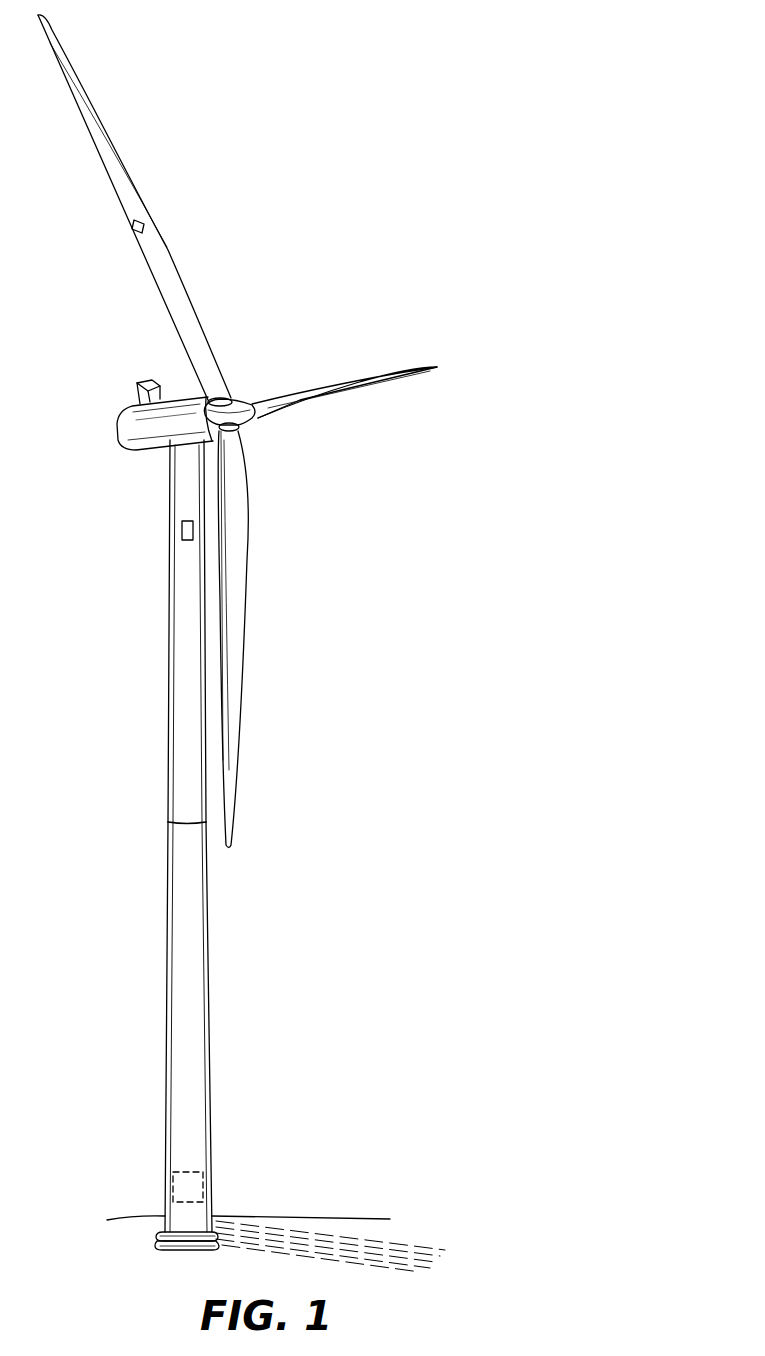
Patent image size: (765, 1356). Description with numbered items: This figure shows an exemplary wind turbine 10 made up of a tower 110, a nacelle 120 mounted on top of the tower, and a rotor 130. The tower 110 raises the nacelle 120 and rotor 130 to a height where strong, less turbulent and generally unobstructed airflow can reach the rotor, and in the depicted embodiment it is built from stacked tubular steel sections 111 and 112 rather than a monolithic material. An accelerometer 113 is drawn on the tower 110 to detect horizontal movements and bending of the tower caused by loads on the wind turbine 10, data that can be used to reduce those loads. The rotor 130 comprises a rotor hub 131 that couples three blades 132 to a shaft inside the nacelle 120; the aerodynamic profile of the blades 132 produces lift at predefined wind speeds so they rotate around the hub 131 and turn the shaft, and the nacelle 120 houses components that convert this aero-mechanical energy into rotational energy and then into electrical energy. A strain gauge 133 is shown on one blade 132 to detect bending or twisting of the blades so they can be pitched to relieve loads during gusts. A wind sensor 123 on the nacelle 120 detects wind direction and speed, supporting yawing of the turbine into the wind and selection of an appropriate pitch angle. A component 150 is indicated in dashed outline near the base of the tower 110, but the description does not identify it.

The wind turbine 10 is at (366, 257).
The tower 110 is at (164, 692).
The tubular steel section 111 is at (172, 1015).
The tubular steel section 112 is at (175, 609).
The accelerometer 113 is at (182, 530).
The nacelle 120 is at (112, 423).
The wind sensor 123 is at (140, 380).
The rotor 130 is at (246, 424).
The rotor hub 131 is at (230, 396).
The blade 132 is at (75, 110).
The strain gauge 133 is at (133, 221).
The foundation controller 150 is at (174, 1180).